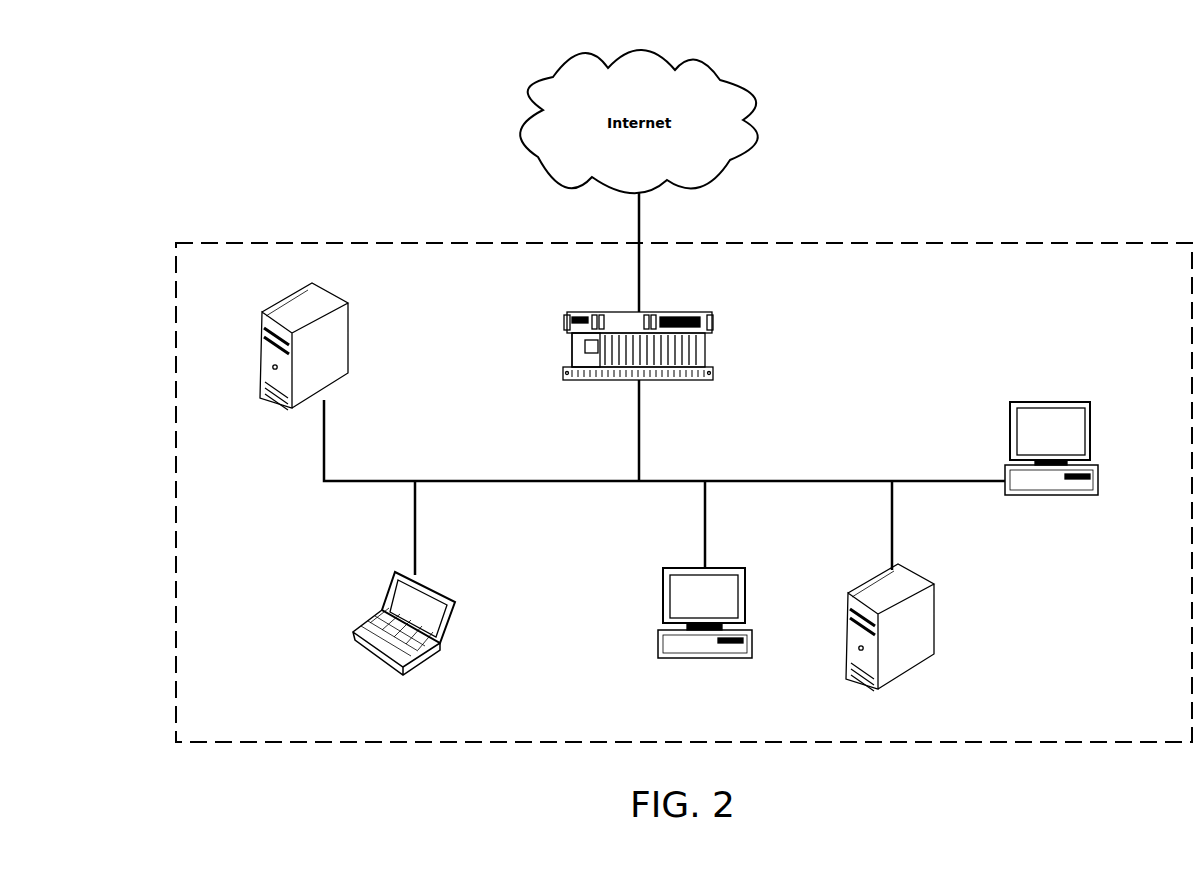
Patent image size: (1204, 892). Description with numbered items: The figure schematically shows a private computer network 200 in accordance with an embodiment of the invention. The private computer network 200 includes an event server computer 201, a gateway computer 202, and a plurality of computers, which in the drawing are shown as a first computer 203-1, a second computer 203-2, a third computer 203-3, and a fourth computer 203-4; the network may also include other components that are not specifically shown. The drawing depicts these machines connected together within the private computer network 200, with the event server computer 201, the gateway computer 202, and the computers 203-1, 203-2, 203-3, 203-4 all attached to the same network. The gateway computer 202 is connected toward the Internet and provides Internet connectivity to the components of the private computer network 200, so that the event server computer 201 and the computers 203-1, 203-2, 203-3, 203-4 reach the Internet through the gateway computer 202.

The private computer network 200 is at (1047, 242).
The event server computer 201 is at (347, 318).
The gateway computer 202 is at (695, 312).
The computer 203-1 is at (423, 660).
The computer 203-2 is at (663, 590).
The computer 203-3 is at (935, 617).
The computer 203-4 is at (1072, 404).